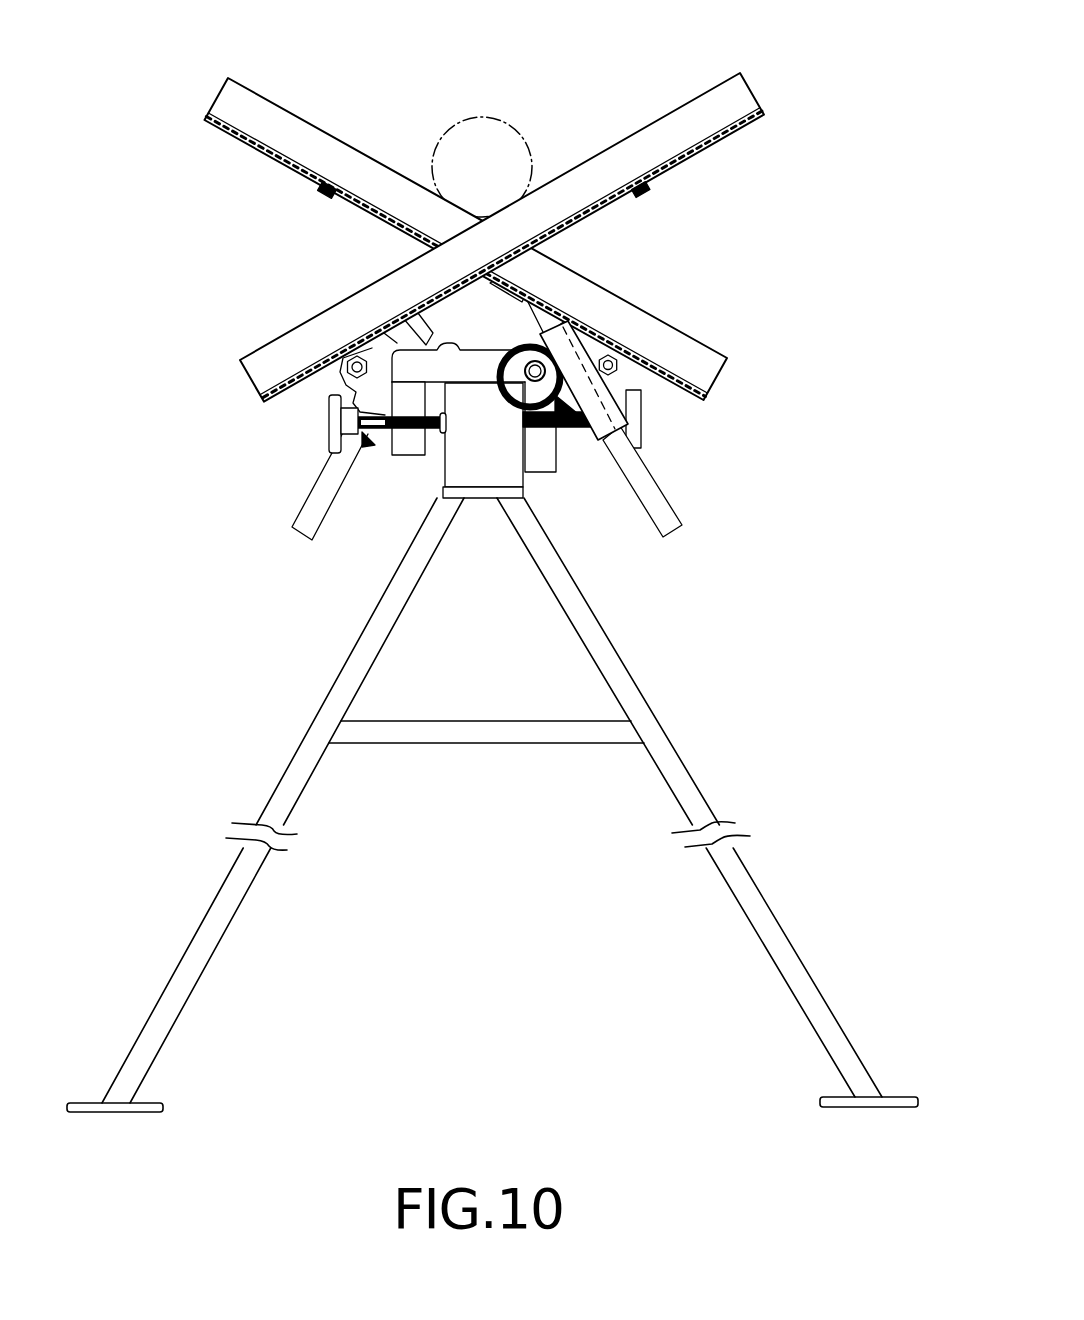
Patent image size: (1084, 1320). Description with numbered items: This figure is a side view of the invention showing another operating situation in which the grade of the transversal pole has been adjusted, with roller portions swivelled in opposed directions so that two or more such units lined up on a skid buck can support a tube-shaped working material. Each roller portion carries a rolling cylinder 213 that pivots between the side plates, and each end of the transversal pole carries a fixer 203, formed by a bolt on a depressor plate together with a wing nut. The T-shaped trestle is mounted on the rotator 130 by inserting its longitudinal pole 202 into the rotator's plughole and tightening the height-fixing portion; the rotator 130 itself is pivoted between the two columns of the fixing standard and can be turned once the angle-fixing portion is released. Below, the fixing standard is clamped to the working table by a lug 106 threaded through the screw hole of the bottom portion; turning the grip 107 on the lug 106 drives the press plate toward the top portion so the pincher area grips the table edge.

The rolling cylinder 213 is at (258, 105).
The fixer 203 is at (645, 195).
The rotator 130 is at (622, 382).
The longitudinal pole 202 is at (305, 528).
The grip 107 is at (322, 415).
The lug 106 is at (382, 430).